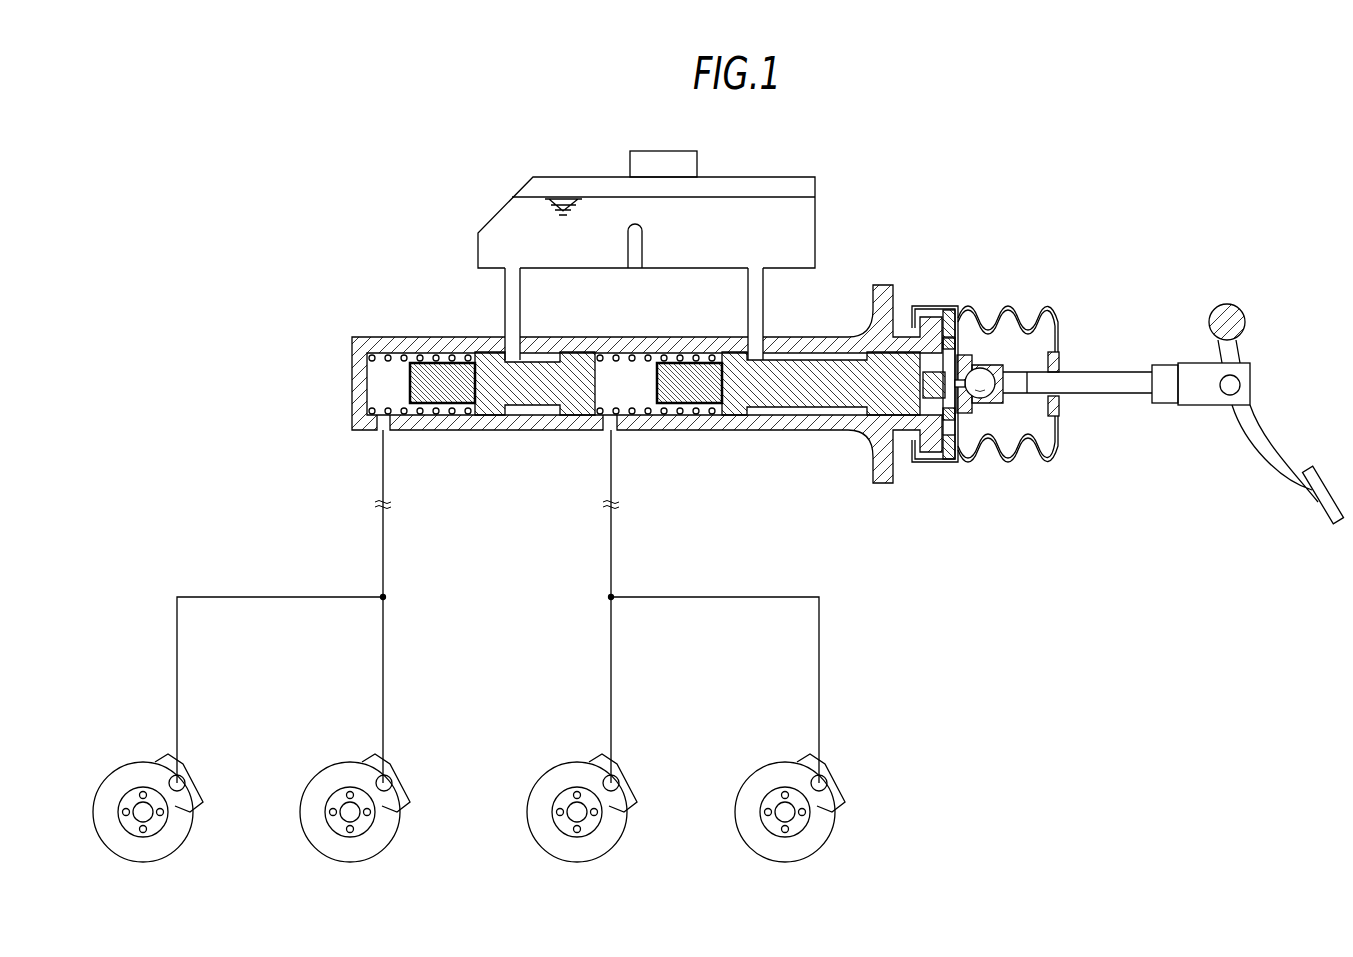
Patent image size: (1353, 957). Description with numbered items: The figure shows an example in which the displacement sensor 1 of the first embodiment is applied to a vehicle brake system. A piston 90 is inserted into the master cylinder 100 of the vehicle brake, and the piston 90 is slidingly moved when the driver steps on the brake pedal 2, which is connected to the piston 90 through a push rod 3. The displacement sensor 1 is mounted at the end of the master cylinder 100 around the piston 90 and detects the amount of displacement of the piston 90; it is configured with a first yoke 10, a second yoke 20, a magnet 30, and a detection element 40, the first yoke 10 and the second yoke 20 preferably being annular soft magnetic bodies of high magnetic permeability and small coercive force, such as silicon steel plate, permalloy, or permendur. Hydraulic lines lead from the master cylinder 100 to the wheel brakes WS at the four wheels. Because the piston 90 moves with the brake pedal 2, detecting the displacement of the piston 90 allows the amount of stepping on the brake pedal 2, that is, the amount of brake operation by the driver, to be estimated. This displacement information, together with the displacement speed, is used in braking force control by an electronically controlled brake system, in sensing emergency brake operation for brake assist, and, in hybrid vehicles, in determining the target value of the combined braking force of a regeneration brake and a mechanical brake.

The displacement sensor 1 is at (948, 307).
The brake pedal 2 is at (1318, 470).
The push rod 3 is at (1093, 387).
The first yoke 10 is at (958, 419).
The second yoke 20 is at (950, 455).
The magnet 30 is at (936, 372).
The detection element 40 is at (957, 340).
The piston 90 is at (890, 404).
The master cylinder 100 is at (774, 432).
The wheel brake WS is at (481, 798).